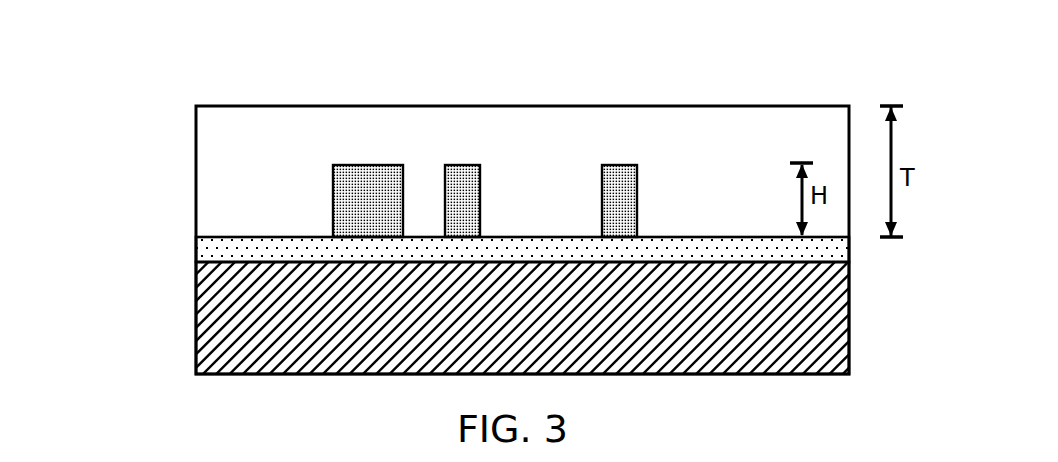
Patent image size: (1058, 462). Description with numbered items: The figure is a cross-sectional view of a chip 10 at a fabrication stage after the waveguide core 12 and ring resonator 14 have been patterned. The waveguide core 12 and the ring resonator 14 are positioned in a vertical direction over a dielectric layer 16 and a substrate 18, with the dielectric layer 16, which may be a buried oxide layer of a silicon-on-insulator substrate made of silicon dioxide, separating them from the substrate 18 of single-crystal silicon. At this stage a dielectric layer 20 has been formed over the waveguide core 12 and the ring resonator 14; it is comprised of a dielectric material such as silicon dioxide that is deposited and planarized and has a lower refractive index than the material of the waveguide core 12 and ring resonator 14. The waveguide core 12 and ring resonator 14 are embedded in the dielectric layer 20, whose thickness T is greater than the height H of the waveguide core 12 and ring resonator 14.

The chip 10 is at (170, 83).
The waveguide core 12 is at (358, 204).
The ring resonator 14 is at (625, 203).
The dielectric layer 16 is at (227, 252).
The substrate 18 is at (820, 328).
The dielectric layer 20 is at (223, 155).